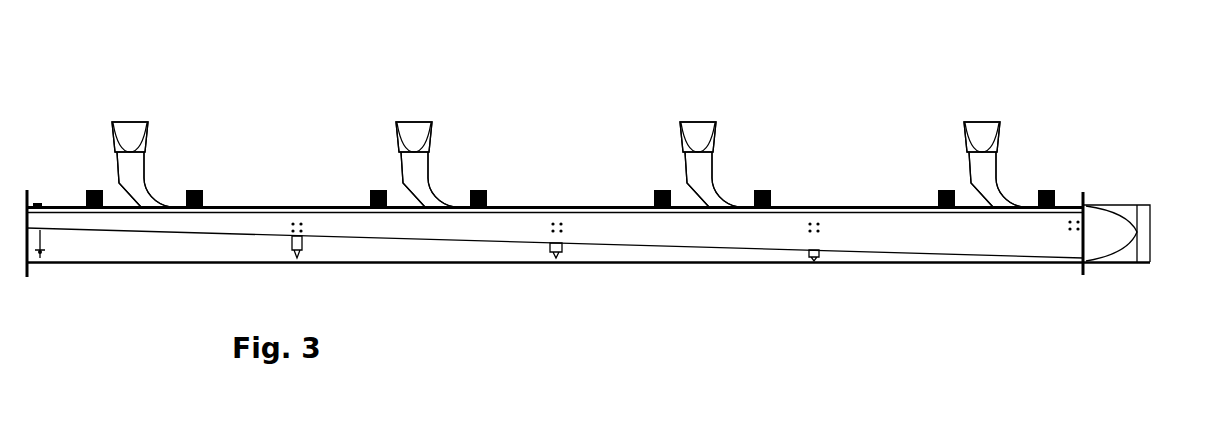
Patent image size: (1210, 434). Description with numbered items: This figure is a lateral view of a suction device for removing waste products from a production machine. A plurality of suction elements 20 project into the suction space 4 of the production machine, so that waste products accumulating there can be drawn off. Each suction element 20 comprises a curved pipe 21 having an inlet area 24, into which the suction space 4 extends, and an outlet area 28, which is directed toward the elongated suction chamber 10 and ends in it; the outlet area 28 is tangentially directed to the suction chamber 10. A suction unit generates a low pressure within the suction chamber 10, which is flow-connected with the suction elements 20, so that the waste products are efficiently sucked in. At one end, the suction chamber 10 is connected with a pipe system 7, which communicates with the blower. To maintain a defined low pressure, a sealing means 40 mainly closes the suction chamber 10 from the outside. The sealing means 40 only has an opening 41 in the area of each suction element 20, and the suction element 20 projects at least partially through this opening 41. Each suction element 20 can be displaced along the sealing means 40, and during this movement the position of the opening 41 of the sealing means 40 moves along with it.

The suction space 4 is at (1037, 352).
The pipe system 7 is at (1148, 217).
The suction chamber 10 is at (857, 220).
The suction element 20 is at (117, 163).
The curved pipe 21 is at (135, 182).
The inlet area 24 is at (133, 132).
The outlet area 28 is at (155, 212).
The sealing means 40 is at (604, 205).
The opening 41 is at (175, 205).